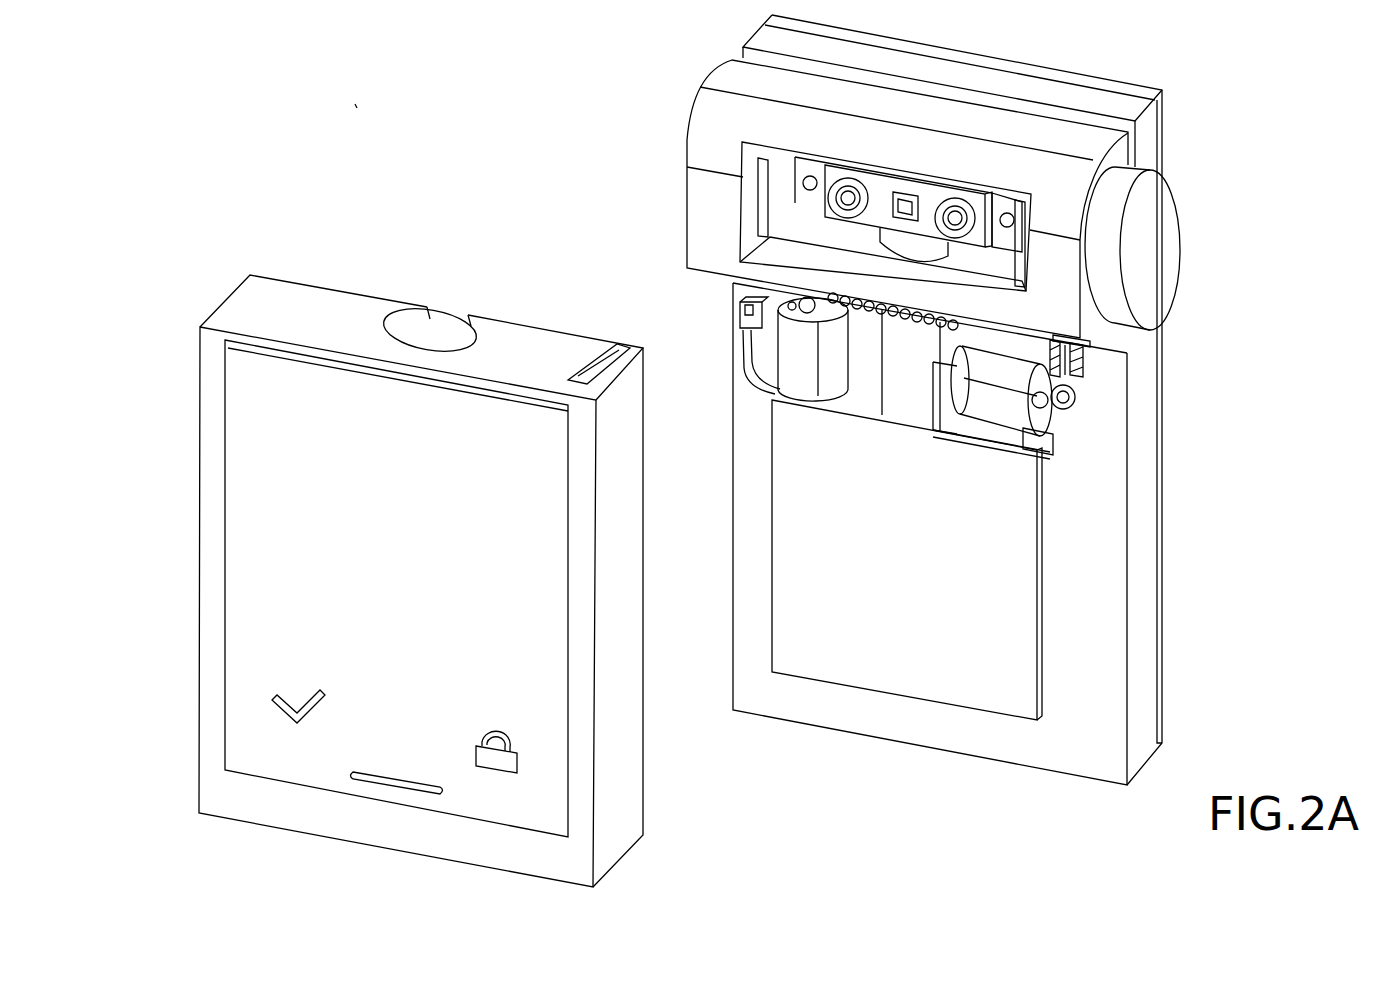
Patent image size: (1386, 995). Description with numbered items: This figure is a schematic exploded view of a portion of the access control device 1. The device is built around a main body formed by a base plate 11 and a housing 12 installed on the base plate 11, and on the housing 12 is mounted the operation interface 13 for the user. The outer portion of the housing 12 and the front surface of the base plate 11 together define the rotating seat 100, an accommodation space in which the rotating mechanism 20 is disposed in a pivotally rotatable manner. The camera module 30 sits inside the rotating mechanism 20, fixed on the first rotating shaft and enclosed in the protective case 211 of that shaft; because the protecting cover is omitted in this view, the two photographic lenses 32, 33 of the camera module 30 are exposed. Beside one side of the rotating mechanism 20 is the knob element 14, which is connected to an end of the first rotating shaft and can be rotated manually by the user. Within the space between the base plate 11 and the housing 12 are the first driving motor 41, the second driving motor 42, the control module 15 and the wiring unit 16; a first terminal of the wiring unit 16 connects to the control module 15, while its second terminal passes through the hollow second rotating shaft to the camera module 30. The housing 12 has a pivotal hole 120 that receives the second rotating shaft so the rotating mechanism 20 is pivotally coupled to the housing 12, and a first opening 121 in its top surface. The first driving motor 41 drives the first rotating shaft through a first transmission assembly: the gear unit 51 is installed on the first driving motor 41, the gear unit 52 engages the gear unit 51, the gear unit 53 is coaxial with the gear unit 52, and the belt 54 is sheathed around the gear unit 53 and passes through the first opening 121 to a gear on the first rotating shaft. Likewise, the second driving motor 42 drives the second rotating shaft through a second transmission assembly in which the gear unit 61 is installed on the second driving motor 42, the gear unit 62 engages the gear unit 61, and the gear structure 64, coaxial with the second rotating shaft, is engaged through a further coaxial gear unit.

The access control device 1 is at (357, 105).
The rotating seat 100 is at (850, 72).
The base plate 11 is at (1145, 585).
The housing 12 is at (215, 657).
The operation interface 13 is at (250, 487).
The knob element 14 is at (1158, 218).
The control module 15 is at (800, 605).
The wiring unit 16 is at (893, 397).
The rotating mechanism 20 is at (700, 225).
The camera module 30 is at (880, 187).
The photographic lens 32 is at (960, 195).
The photographic lens 33 is at (840, 172).
The first driving motor 41 is at (1000, 397).
The second driving motor 42 is at (800, 380).
The gear unit 51 is at (1070, 413).
The gear unit 52 is at (1030, 355).
The gear unit 53 is at (1077, 353).
The belt 54 is at (1090, 347).
The gear unit 61 is at (750, 283).
The gear unit 62 is at (815, 318).
The gear structure 64 is at (880, 323).
The pivotal hole 120 is at (438, 330).
The first opening 121 is at (600, 362).
The protective case 211 is at (783, 200).